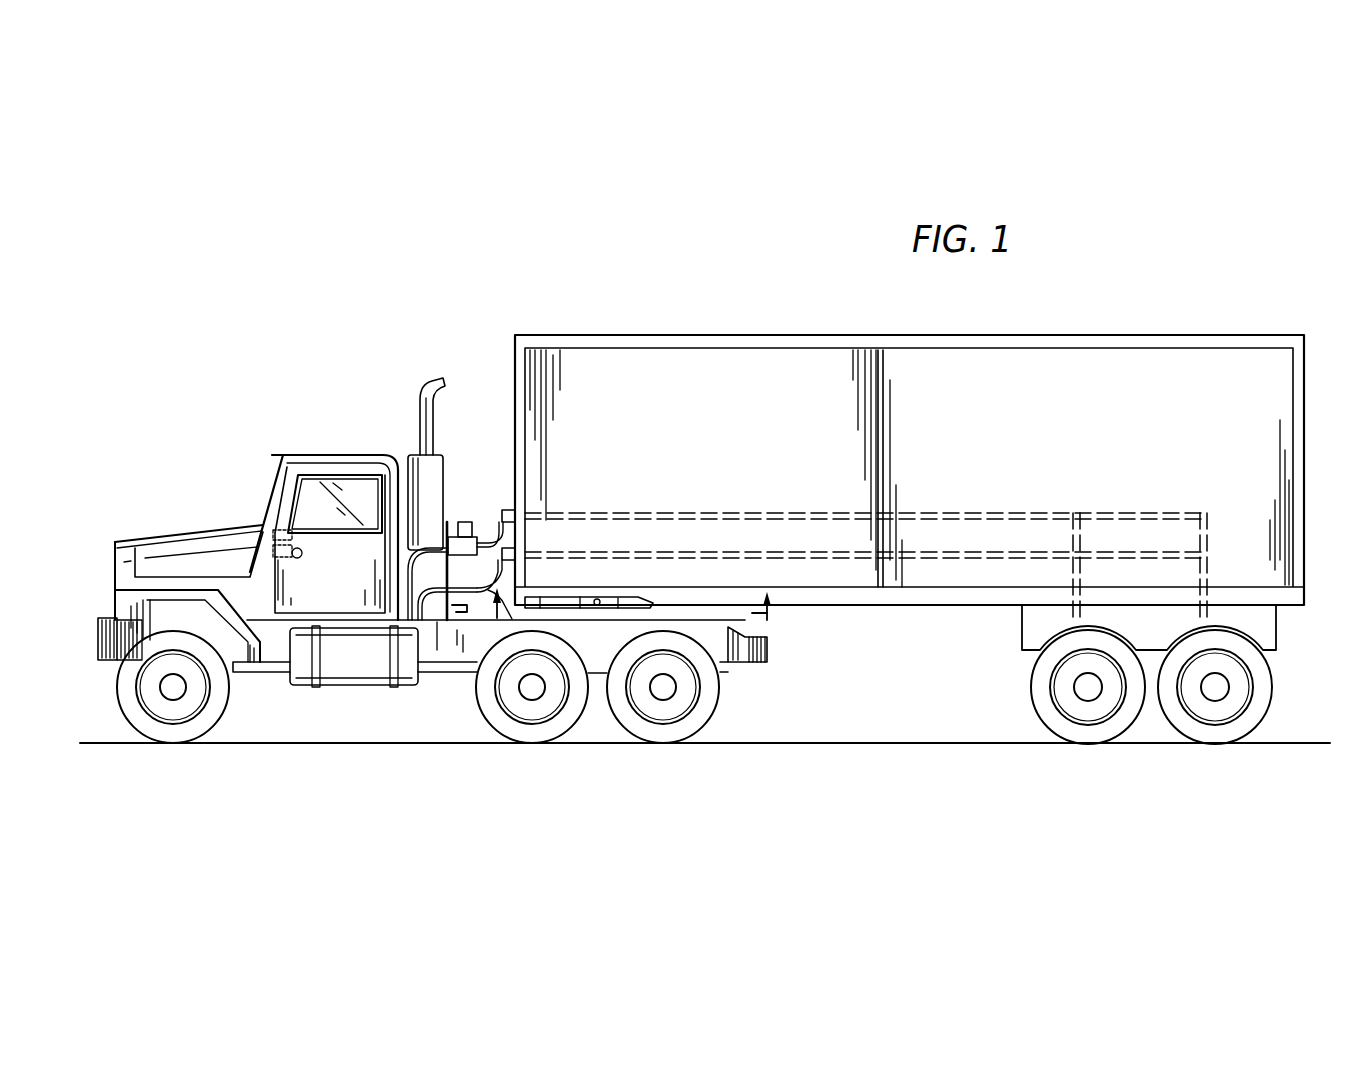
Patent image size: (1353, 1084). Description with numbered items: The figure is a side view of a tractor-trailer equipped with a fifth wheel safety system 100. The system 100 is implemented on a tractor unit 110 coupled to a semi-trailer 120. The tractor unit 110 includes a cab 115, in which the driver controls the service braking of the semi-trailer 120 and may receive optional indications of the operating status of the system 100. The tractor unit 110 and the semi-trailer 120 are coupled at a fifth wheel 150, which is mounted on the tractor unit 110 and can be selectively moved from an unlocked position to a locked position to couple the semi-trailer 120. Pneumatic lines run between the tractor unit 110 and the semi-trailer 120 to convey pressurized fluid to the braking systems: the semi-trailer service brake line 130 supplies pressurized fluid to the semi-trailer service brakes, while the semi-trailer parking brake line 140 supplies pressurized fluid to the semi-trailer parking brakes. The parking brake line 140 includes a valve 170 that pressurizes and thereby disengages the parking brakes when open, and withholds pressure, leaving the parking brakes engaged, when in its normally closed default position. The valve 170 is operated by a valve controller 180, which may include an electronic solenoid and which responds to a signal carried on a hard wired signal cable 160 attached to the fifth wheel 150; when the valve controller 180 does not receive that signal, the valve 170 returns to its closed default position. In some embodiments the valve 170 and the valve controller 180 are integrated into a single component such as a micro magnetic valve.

The fifth wheel safety system 100 is at (490, 298).
The tractor unit 110 is at (193, 543).
The cab 115 is at (325, 490).
The semi-trailer 120 is at (697, 335).
The semi-trailer service brake line 130 is at (957, 562).
The semi-trailer parking brake line 140 is at (1010, 512).
The fifth wheel 150 is at (597, 612).
The signal cable 160 is at (500, 612).
The valve 170 is at (482, 534).
The valve controller 180 is at (463, 522).